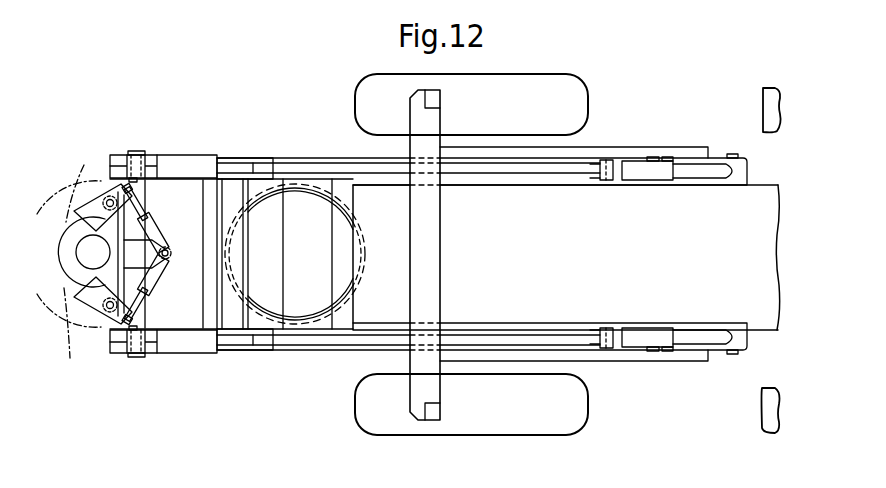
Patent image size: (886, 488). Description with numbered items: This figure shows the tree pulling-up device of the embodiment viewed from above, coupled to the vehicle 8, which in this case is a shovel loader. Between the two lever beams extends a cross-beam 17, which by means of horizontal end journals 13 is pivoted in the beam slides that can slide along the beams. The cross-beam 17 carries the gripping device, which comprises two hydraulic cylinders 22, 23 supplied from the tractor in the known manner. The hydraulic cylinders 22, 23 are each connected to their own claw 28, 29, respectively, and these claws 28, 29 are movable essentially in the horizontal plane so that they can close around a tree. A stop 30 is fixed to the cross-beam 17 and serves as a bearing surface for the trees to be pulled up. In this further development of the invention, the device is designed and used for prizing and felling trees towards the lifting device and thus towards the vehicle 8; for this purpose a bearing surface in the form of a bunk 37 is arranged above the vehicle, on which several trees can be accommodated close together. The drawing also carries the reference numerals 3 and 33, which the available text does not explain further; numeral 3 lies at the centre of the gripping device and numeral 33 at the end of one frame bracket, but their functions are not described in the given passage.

The gripping body 3 is at (100, 266).
The vehicle 8 is at (654, 272).
The horizontal end journals 13 is at (133, 358).
The cross-beam 17 is at (130, 228).
The hydraulic cylinder 22 is at (158, 282).
The hydraulic cylinder 23 is at (160, 242).
The claw 28 is at (85, 305).
The claw 29 is at (78, 204).
The stop 30 is at (78, 278).
The upper frame bracket 33 is at (171, 160).
The bunk 37 is at (428, 230).